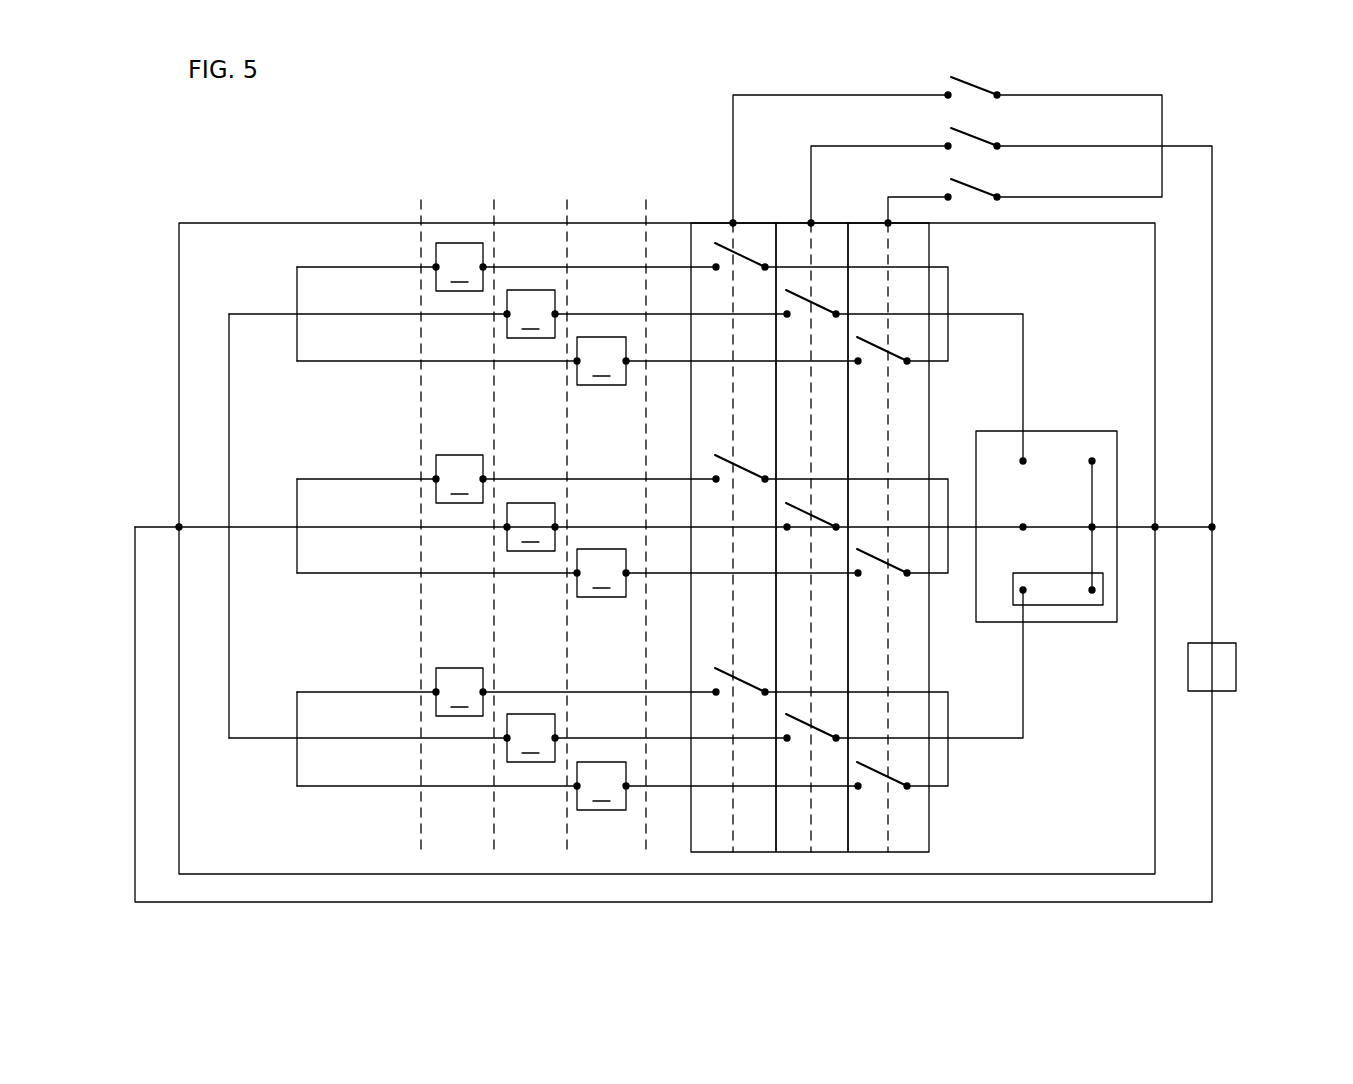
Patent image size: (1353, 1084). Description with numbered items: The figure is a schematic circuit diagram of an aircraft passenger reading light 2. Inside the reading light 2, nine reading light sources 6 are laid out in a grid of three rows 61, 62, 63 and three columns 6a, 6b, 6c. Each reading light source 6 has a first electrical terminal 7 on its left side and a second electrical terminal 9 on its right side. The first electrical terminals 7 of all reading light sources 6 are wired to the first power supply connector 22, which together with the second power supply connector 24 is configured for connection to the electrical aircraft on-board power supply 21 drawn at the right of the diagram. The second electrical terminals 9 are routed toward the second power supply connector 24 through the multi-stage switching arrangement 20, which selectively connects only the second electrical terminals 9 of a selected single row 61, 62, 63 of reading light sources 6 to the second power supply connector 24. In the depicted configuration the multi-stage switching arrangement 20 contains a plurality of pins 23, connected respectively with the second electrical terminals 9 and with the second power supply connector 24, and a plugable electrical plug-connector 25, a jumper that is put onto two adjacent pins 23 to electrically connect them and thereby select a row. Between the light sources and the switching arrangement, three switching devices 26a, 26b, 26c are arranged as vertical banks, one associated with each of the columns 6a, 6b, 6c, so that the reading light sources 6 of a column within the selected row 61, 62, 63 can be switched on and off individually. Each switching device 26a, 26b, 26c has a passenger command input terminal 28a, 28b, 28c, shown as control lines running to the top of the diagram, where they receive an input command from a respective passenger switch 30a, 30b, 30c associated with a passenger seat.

The aircraft passenger reading light 2 is at (147, 215).
The reading light source 6 is at (531, 526).
The column of reading light sources 6a is at (461, 208).
The column of reading light sources 6b is at (536, 208).
The column of reading light sources 6c is at (612, 208).
The first electrical terminal 7 is at (436, 267).
The second electrical terminal 9 is at (483, 267).
The multi-stage switching arrangement 20 is at (1098, 405).
The electrical aircraft on-board power supply 21 is at (1222, 670).
The first power supply connector 22 is at (179, 527).
The pin 23 is at (1023, 527).
The second power supply connector 24 is at (1155, 530).
The plugable electrical plug-connector 25 is at (1062, 595).
The switching device 26a is at (737, 862).
The switching device 26b is at (811, 862).
The switching device 26c is at (888, 862).
The passenger command input terminal 28a is at (733, 222).
The passenger command input terminal 28b is at (811, 222).
The passenger command input terminal 28c is at (888, 222).
The passenger switch 30a is at (990, 72).
The passenger switch 30b is at (990, 124).
The passenger switch 30c is at (990, 176).
The row of reading light sources 61 is at (285, 283).
The row of reading light sources 62 is at (285, 502).
The row of reading light sources 63 is at (285, 714).